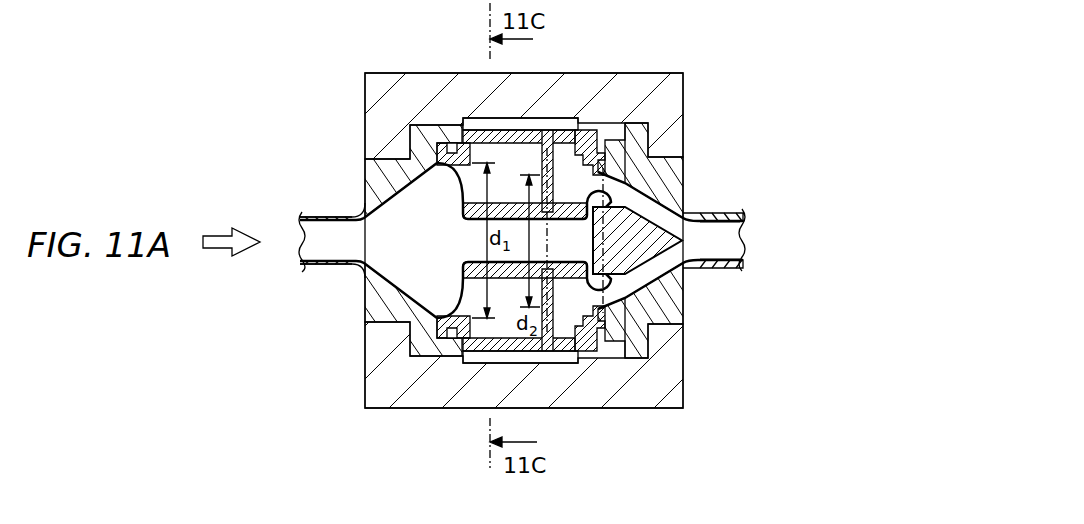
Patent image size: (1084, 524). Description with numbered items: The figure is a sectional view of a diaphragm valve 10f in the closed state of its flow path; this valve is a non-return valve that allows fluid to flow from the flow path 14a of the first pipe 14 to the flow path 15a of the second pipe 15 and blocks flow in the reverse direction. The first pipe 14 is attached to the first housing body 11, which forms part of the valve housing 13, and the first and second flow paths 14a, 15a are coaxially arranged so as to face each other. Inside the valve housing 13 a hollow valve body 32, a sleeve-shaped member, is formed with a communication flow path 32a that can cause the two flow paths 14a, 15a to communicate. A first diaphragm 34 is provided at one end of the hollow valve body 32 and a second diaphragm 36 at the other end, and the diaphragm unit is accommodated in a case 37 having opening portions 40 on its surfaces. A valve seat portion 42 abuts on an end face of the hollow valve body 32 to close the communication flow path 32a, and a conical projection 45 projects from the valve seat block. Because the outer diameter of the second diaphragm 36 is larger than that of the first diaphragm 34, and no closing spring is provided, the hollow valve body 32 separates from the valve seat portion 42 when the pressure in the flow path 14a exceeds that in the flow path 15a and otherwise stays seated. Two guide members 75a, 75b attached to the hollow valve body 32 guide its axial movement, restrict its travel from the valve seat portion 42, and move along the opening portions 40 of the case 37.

The diaphragm valve 10f is at (697, 81).
The first housing body 11 is at (672, 393).
The valve housing 13 is at (683, 100).
The first pipe 14 is at (742, 217).
The flow path 14a is at (710, 232).
The second pipe 15 is at (340, 266).
The flow path 15a is at (318, 233).
The hollow valve body 32 is at (465, 271).
The communication flow path 32a is at (473, 242).
The first diaphragm 34 is at (648, 303).
The second diaphragm 36 is at (450, 177).
The case 37 is at (455, 373).
The opening portions 40 is at (558, 132).
The valve seat portion 42 is at (690, 269).
The conical projection 45 is at (615, 246).
The guide member 75a is at (597, 150).
The guide member 75b is at (597, 333).